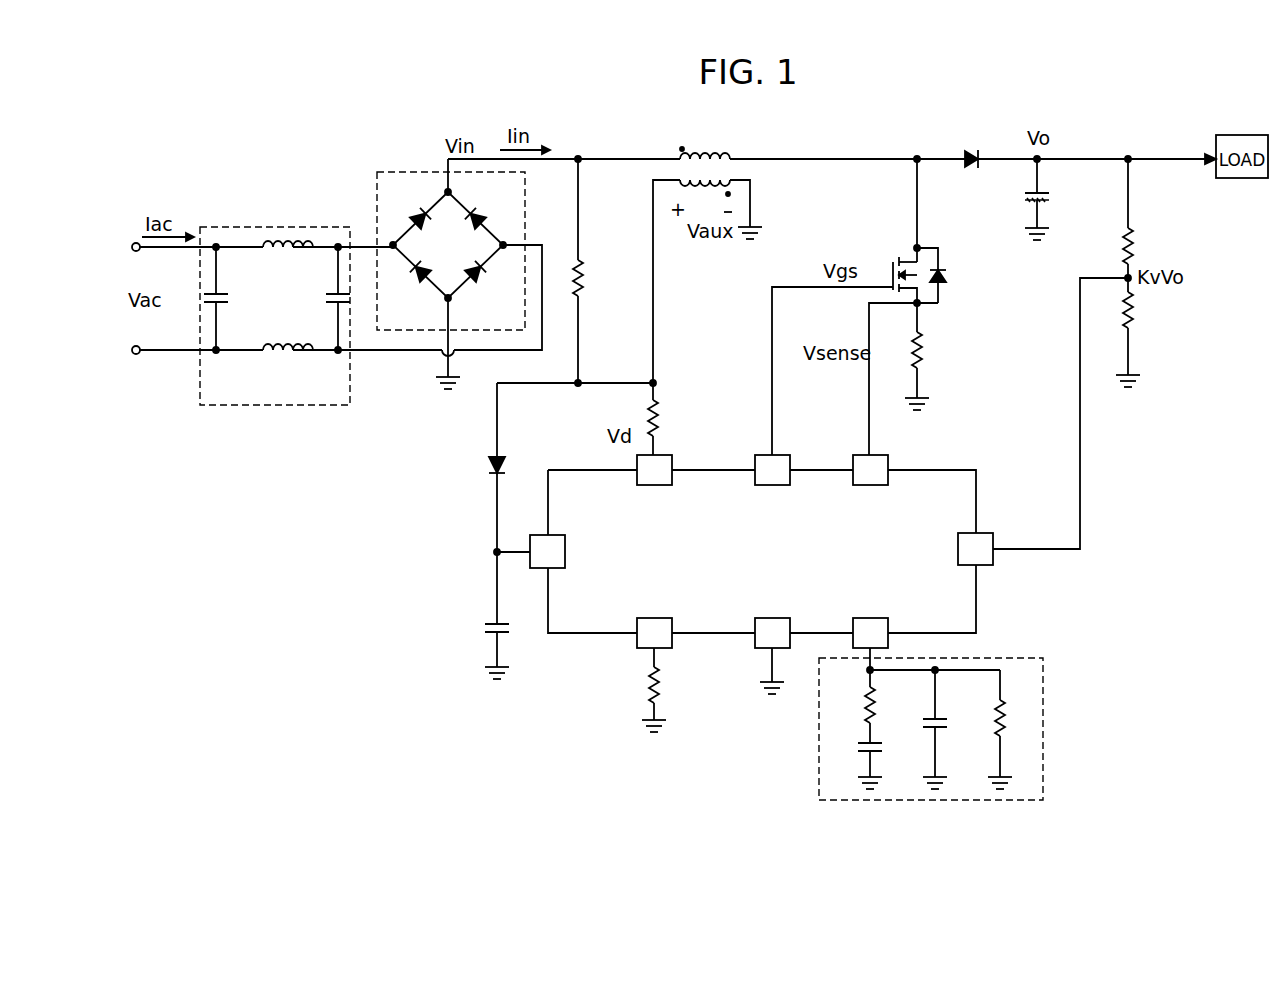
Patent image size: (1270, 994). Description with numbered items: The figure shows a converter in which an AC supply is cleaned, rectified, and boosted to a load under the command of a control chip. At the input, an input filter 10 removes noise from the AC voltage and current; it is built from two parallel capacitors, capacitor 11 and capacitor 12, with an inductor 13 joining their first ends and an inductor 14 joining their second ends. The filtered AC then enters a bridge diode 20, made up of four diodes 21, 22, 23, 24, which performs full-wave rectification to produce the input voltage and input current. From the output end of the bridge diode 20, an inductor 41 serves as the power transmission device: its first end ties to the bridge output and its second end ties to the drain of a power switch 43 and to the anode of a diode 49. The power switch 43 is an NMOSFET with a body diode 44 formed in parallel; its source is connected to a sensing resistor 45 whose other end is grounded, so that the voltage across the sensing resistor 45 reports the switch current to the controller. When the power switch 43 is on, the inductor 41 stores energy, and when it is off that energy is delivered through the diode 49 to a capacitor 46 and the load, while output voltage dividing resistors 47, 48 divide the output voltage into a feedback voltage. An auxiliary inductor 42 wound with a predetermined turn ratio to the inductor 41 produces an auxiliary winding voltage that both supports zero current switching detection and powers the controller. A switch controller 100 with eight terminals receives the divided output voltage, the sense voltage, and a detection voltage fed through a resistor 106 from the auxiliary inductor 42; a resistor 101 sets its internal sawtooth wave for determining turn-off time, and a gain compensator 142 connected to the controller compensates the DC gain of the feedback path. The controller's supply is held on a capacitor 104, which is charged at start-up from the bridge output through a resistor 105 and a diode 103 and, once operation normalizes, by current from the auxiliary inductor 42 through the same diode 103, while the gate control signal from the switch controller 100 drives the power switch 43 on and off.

The input filter 10 is at (344, 227).
The capacitor 11 is at (229, 298).
The capacitor 12 is at (326, 298).
The inductor 13 is at (279, 359).
The inductor 14 is at (280, 239).
The bridge diode 20 is at (390, 173).
The diode 21 is at (415, 215).
The diode 22 is at (485, 215).
The diode 23 is at (419, 286).
The diode 24 is at (488, 286).
The inductor 41 is at (711, 150).
The auxiliary inductor 42 is at (740, 178).
The power switch 43 is at (892, 258).
The body diode 44 is at (948, 273).
The sensing resistor 45 is at (924, 350).
The capacitor 46 is at (1050, 198).
The output voltage dividing resistor 47 is at (1136, 248).
The output voltage dividing resistor 48 is at (1136, 311).
The diode 49 is at (972, 150).
The switch controller 100 is at (976, 613).
The resistor 101 is at (650, 686).
The diode 103 is at (486, 465).
The capacitor 104 is at (486, 628).
The resistor 105 is at (590, 280).
The resistor 106 is at (664, 421).
The gain compensator 142 is at (1044, 678).